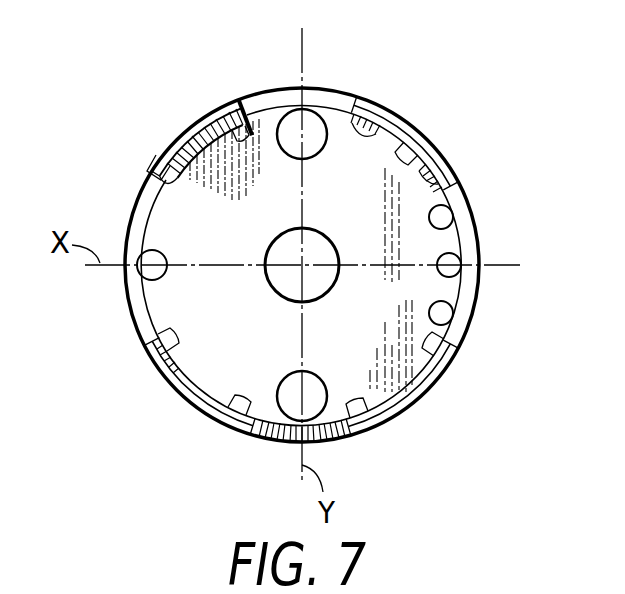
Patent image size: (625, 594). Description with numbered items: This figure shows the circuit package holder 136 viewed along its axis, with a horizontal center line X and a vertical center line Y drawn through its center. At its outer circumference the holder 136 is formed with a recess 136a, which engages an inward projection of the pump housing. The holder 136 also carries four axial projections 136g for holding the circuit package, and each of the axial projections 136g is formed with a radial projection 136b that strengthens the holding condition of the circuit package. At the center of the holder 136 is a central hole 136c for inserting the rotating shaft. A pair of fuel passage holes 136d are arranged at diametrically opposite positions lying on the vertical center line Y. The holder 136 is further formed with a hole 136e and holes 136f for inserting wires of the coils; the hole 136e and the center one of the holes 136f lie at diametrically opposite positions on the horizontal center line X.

The circuit package holder 136 is at (470, 63).
The recess 136a is at (160, 160).
The radial projection 136b is at (224, 135).
The central hole 136c is at (328, 287).
The fuel passage holes 136d is at (317, 122).
The hole 136e is at (140, 277).
The holes 136f is at (459, 256).
The axial projections 136g is at (143, 182).